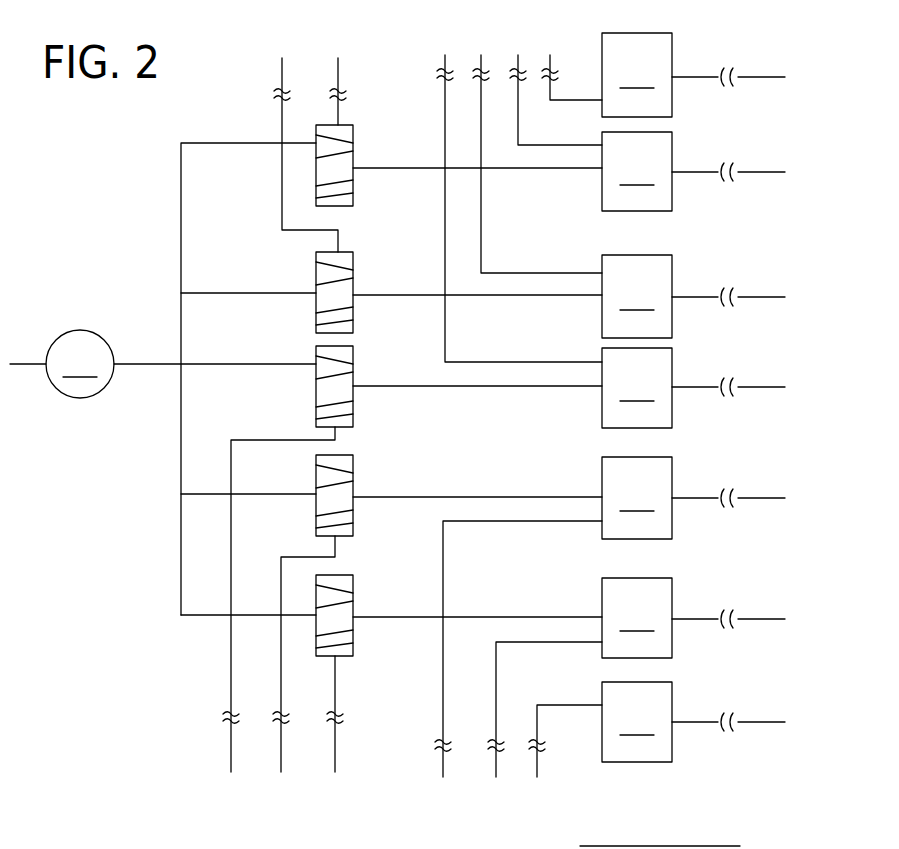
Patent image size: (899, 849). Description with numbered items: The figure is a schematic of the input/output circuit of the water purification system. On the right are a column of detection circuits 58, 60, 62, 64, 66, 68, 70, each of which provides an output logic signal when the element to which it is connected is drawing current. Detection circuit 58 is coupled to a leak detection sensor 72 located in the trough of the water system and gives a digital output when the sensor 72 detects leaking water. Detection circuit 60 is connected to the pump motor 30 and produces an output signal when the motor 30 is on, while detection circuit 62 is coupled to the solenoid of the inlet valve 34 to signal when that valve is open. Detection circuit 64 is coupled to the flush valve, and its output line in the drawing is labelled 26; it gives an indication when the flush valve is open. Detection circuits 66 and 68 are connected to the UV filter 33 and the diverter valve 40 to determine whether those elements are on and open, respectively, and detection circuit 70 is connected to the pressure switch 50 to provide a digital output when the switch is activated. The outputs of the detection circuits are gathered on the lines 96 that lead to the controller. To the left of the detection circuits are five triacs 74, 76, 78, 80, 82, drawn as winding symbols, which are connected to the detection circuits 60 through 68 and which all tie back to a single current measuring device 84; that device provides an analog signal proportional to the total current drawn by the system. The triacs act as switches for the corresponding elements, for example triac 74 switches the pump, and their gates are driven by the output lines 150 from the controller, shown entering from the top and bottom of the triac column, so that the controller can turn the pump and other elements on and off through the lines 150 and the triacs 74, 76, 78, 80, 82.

The output lines 150 is at (272, 52).
The output lines 96 is at (438, 49).
The triac 74 is at (354, 183).
The triac 76 is at (354, 310).
The triac 78 is at (354, 404).
The triac 80 is at (354, 513).
The triac 82 is at (354, 633).
The current measuring device 84 is at (163, 364).
The detection circuit 58 is at (637, 75).
The detection circuit 60 is at (637, 171).
The detection circuit 62 is at (637, 296).
The detection circuit 64 is at (637, 388).
The detection circuit 66 is at (637, 498).
The detection circuit 68 is at (637, 618).
The detection circuit 70 is at (637, 722).
The leak detection sensor 72 is at (762, 74).
The pump motor 30 is at (762, 169).
The inlet valve 34 is at (762, 294).
The output line 26 is at (762, 384).
The UV filter 33 is at (762, 495).
The diverter valve 40 is at (762, 616).
The pressure switch 50 is at (762, 719).